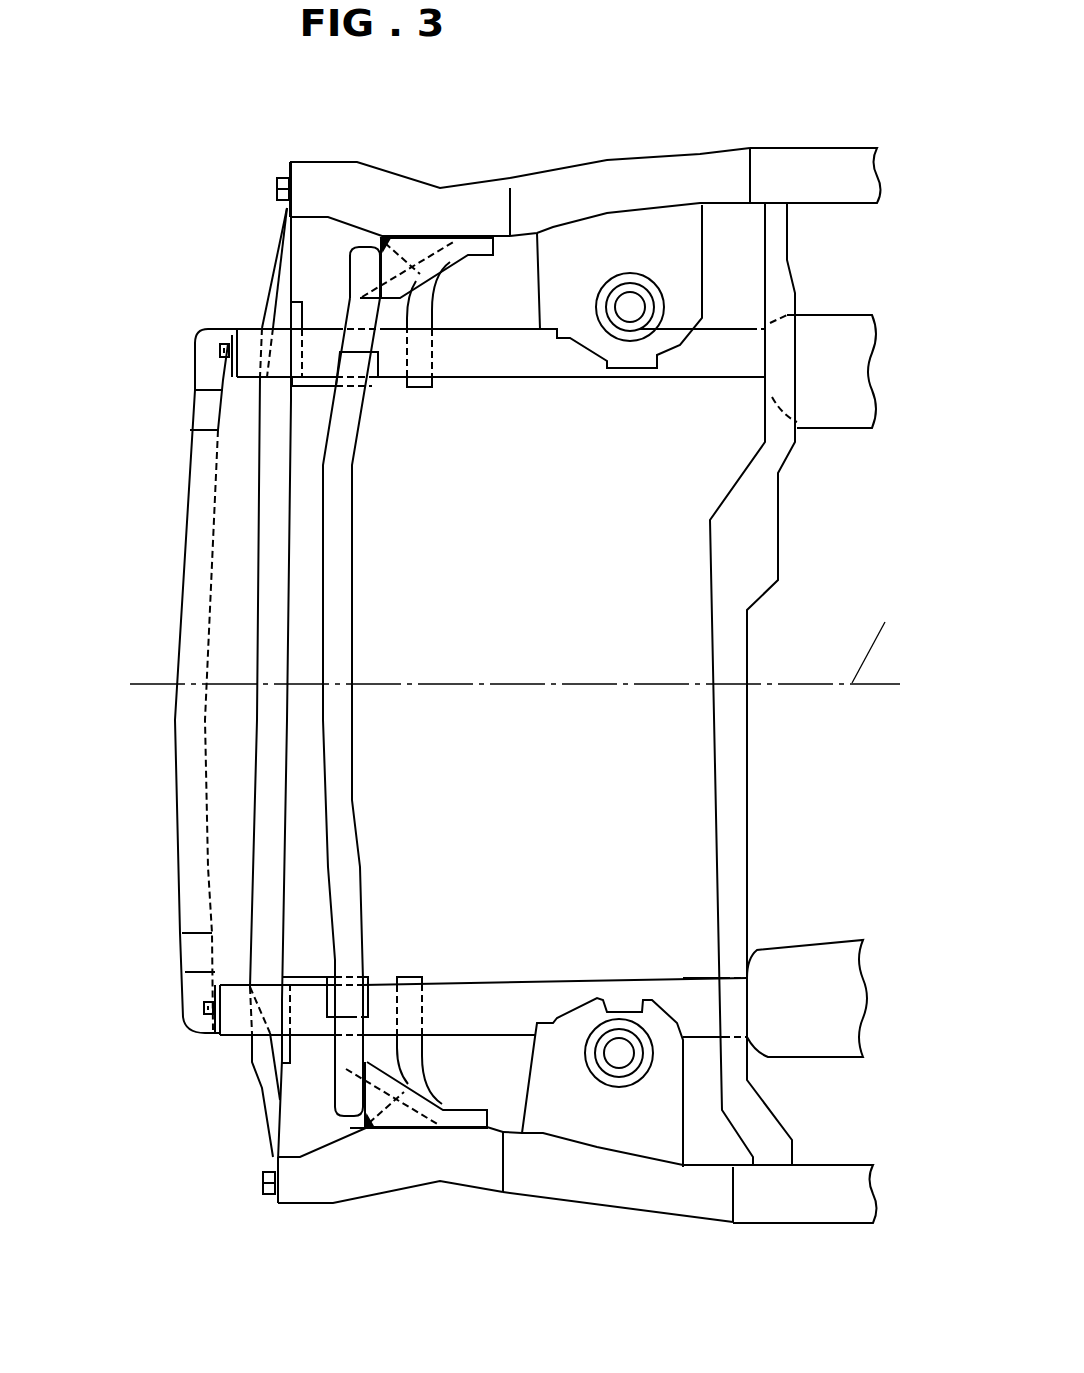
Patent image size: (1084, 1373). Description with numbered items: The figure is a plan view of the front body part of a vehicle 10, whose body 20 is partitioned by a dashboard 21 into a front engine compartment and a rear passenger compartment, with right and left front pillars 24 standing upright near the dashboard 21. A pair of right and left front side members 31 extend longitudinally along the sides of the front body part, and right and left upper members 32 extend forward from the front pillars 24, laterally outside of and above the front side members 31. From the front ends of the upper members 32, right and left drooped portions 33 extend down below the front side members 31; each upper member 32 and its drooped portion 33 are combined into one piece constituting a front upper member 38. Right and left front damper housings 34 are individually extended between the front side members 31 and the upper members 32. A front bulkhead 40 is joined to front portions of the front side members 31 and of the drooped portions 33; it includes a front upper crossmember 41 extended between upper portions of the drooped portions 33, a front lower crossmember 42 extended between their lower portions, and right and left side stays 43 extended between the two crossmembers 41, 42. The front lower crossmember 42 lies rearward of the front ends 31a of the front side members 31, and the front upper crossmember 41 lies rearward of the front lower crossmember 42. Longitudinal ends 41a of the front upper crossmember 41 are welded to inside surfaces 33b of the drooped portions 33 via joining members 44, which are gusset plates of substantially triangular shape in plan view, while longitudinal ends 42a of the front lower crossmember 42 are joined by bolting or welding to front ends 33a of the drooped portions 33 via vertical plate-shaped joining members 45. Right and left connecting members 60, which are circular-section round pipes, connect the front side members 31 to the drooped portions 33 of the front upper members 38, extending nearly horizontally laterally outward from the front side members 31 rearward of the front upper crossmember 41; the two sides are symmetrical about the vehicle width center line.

The vehicle 10 is at (247, 137).
The body 20 is at (850, 147).
The dashboard 21 is at (780, 543).
The front pillar 24 is at (765, 160).
The front side member 31 is at (496, 372).
The front end of front side member 31a is at (212, 380).
The upper member 32 is at (627, 177).
The drooped portion 33 is at (485, 195).
The front end of drooped portion 33a is at (288, 176).
The inside surface of drooped portion 33b is at (498, 237).
The front damper housing 34 is at (597, 337).
The front upper member 38 is at (508, 112).
The front bulkhead 40 is at (248, 763).
The front upper crossmember 41 is at (343, 615).
The longitudinal end of front upper crossmember 41a is at (350, 247).
The front lower crossmember 42 is at (267, 587).
The longitudinal end of front lower crossmember 42a is at (275, 268).
The side stay 43 is at (310, 388).
The joining member 44 is at (428, 247).
The joining member 45 is at (283, 207).
The connecting member 60 is at (418, 388).